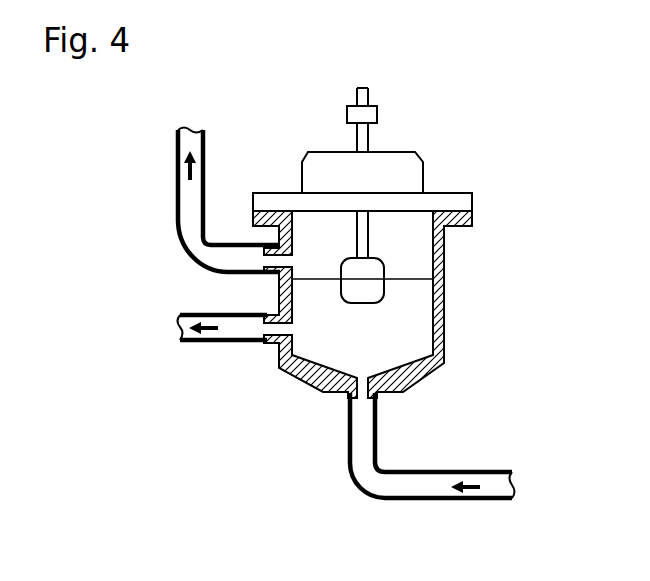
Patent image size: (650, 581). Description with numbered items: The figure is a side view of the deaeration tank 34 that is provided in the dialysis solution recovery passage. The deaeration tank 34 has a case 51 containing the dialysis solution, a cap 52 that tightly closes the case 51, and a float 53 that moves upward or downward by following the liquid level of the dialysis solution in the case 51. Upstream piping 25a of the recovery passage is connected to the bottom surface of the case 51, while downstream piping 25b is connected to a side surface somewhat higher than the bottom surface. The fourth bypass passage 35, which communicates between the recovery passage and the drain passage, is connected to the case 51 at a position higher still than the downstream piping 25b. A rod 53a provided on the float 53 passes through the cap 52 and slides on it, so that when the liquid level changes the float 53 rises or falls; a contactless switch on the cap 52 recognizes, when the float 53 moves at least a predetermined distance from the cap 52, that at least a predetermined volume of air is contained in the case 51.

The deaeration tank 34 is at (424, 157).
The fourth bypass passage 35 is at (205, 150).
The case 51 is at (445, 296).
The cap 52 is at (457, 193).
The float 53 is at (383, 262).
The rod 53a is at (369, 243).
The upstream piping 25a is at (448, 500).
The downstream piping 25b is at (210, 343).